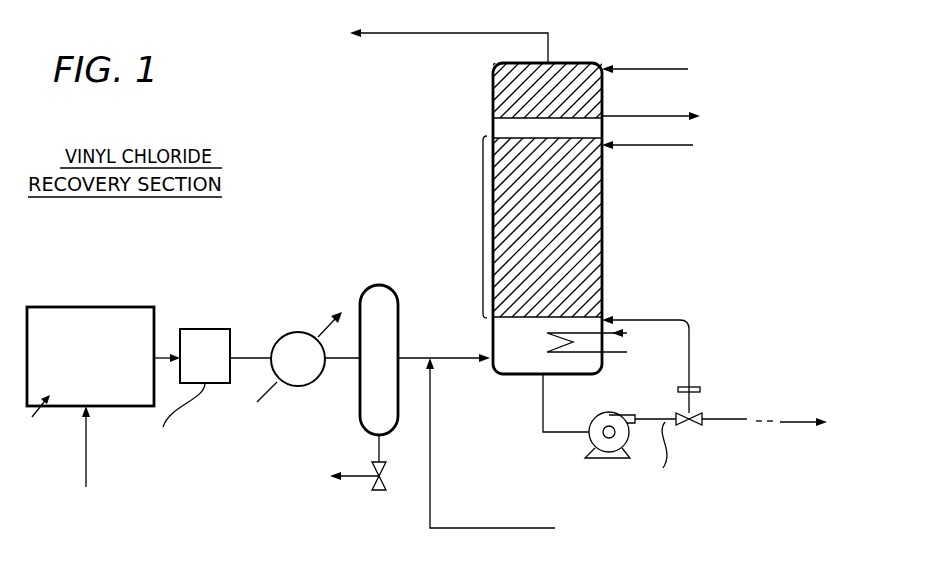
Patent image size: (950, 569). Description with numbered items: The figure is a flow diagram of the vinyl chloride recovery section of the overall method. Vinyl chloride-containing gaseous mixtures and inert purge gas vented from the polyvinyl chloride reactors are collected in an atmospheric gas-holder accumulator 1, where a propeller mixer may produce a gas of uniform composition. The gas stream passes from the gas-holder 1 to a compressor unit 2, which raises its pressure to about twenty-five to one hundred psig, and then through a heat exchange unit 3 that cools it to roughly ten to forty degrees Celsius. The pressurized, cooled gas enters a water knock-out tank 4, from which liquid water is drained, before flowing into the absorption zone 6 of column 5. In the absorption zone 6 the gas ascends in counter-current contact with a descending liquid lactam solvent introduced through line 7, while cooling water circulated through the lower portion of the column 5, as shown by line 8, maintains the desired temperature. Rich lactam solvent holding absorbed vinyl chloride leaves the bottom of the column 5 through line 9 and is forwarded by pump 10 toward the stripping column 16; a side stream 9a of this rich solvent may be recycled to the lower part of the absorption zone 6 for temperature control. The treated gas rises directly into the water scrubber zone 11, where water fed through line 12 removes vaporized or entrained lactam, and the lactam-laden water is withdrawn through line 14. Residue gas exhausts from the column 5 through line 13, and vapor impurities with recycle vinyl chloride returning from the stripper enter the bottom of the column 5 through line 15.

The gas-holder accumulator 1 is at (110, 307).
The compressor unit 2 is at (213, 329).
The heat exchange unit 3 is at (312, 388).
The water knock-out tank 4 is at (367, 290).
The column 5 is at (602, 225).
The absorption zone 6 is at (481, 228).
The line 7 is at (646, 150).
The line 8 is at (632, 338).
The line 9 is at (548, 433).
The side stream 9a is at (690, 362).
The pump 10 is at (610, 457).
The water scrubber zone 11 is at (493, 100).
The line 12 is at (648, 65).
The line 13 is at (436, 30).
The line 14 is at (648, 111).
The line 15 is at (472, 528).
The stripping column 16 is at (783, 425).